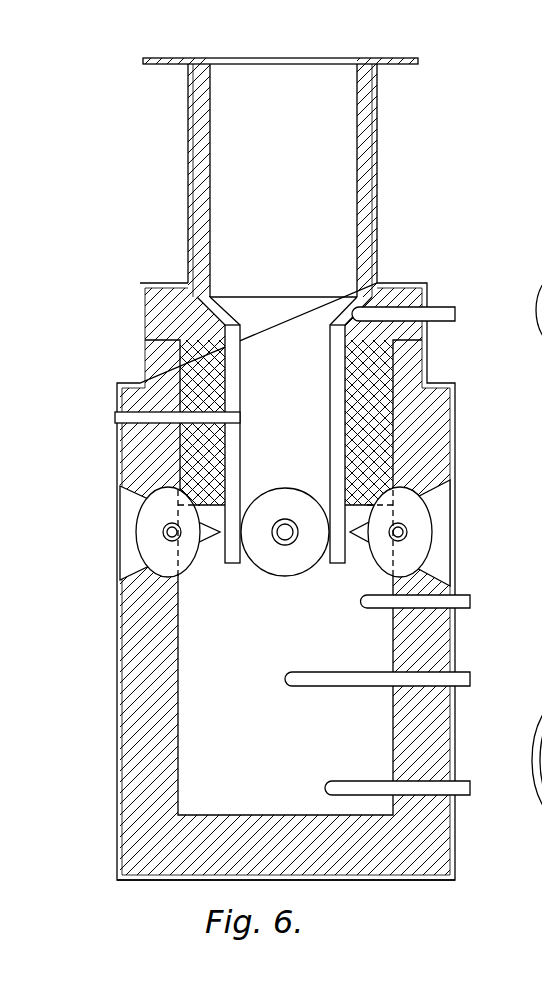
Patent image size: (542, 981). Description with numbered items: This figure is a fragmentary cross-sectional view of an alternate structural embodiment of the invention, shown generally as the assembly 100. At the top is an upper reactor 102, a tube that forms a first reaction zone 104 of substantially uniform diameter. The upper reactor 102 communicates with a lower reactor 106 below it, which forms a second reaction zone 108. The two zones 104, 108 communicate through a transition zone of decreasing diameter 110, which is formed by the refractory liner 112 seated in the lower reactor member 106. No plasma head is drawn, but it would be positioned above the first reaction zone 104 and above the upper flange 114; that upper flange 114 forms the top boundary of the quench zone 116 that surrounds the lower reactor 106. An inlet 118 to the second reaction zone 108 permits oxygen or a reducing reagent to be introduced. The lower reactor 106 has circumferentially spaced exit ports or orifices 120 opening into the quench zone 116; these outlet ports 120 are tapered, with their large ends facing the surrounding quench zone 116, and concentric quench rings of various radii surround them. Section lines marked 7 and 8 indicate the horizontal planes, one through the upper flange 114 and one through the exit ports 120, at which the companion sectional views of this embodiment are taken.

The pinch valve assembly 100 is at (395, 254).
The upper reactor 102 is at (378, 160).
The reaction zone 104 is at (296, 158).
The lower reactor 106 is at (140, 358).
The second reaction zone 108 is at (308, 408).
The transition zone of decreasing diameter 110 is at (300, 318).
The refractory liner 112 is at (213, 312).
The upper flange 114 is at (384, 58).
The quench zone 116 is at (518, 646).
The inlet 118 is at (115, 418).
The exit ports 120 is at (145, 525).
The section line 7- 7 is at (143, 59).
The section line 8- 8 is at (138, 532).